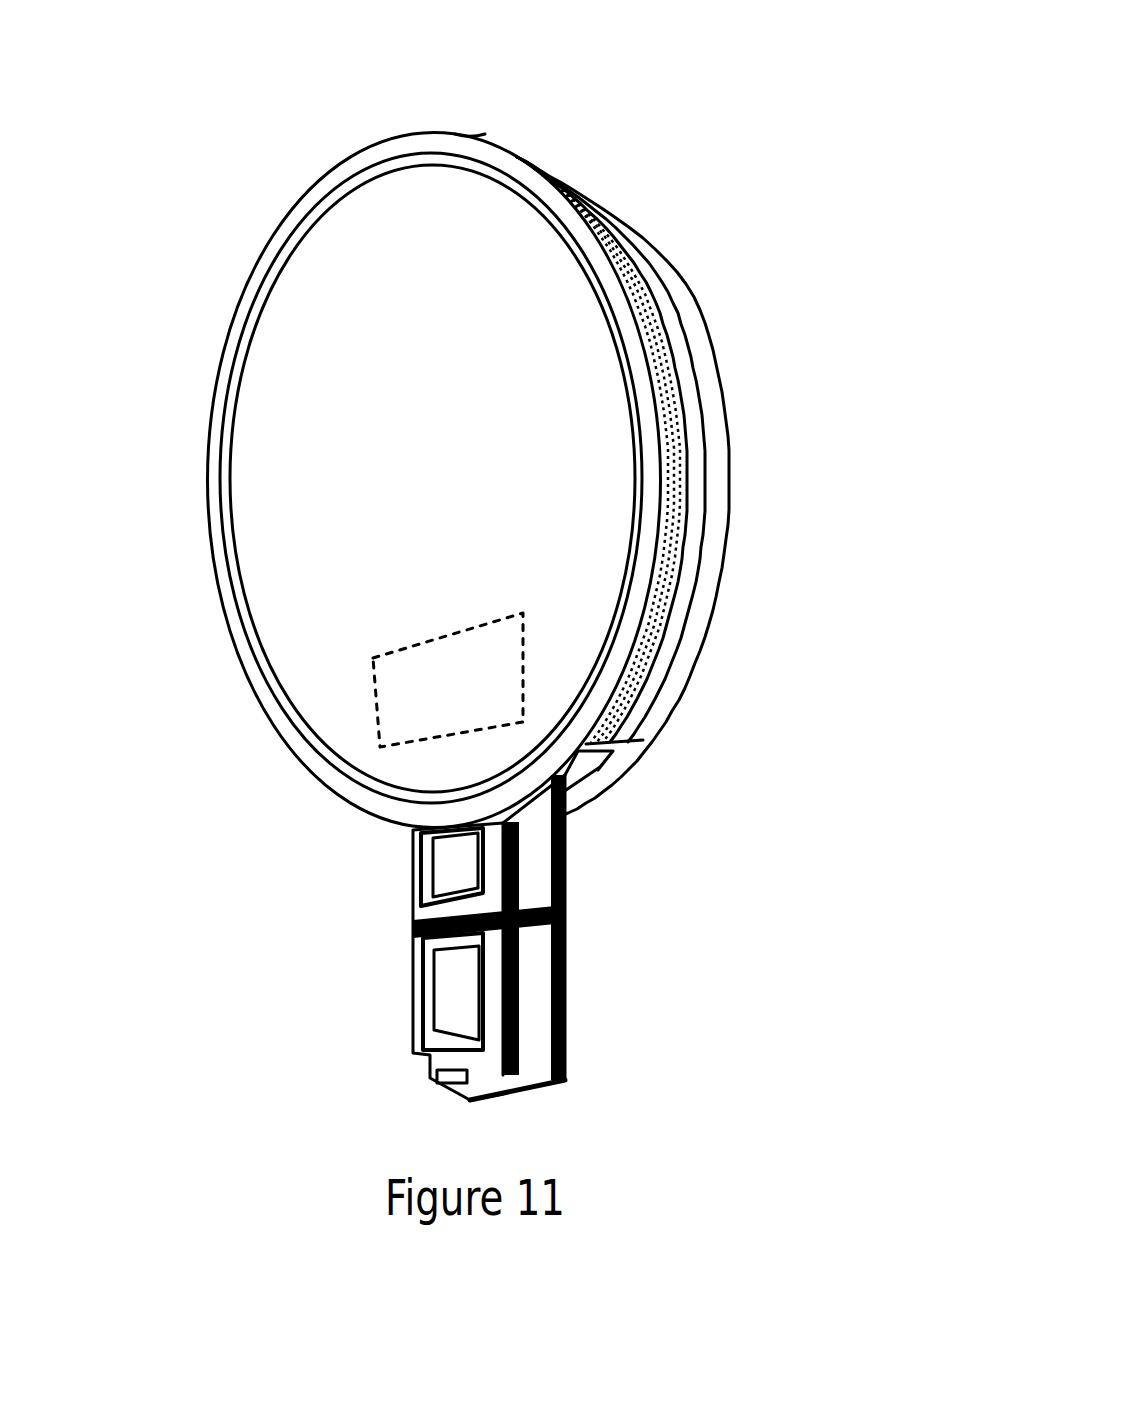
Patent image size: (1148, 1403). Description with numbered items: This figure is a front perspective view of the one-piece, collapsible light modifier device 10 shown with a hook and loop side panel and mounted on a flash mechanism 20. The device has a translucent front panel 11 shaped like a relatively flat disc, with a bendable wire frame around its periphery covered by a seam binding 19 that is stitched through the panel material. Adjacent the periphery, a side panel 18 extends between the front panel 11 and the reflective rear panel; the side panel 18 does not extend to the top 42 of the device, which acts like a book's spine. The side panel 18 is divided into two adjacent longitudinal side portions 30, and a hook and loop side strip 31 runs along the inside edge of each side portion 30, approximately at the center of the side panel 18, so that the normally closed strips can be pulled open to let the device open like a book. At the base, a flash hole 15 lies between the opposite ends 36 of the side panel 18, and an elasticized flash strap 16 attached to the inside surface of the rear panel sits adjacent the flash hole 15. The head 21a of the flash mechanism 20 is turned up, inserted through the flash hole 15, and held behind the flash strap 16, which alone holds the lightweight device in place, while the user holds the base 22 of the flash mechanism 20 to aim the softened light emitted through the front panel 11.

The light modifier device 10 is at (700, 148).
The translucent front panel 11 is at (262, 520).
The flash hole 15 is at (582, 768).
The flash strap 16 is at (378, 718).
The side panel 18 is at (695, 445).
The seam binding 19 is at (712, 353).
The flash mechanism 20 is at (512, 937).
The head of the flash mechanism 21a is at (425, 887).
The base of the flash mechanism 22 is at (455, 993).
The longitudinal side portion 30 is at (665, 650).
The hook and loop side strip 31 is at (675, 598).
The opposite ends of the side panel 36 is at (620, 746).
The top of the light modifier device 42 is at (498, 138).